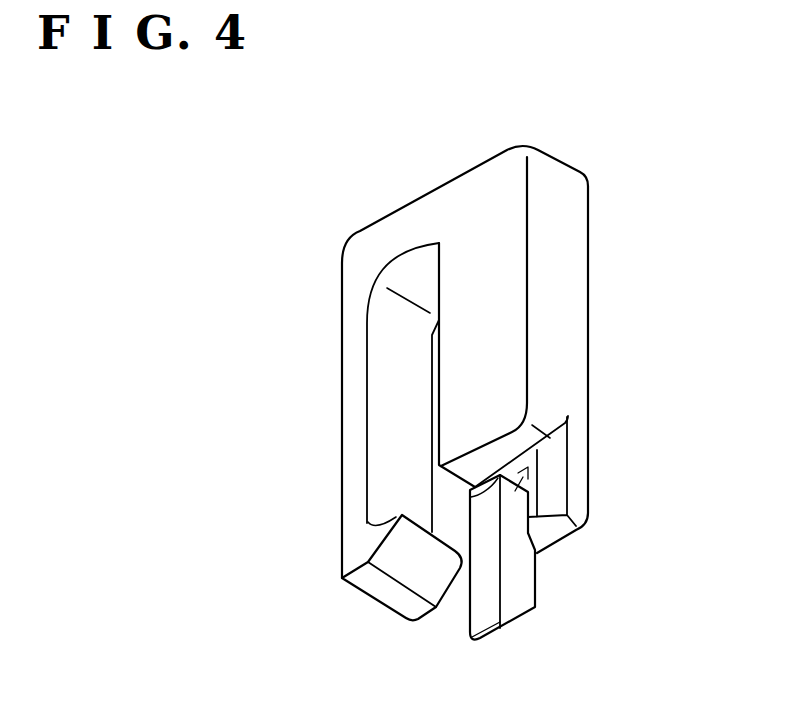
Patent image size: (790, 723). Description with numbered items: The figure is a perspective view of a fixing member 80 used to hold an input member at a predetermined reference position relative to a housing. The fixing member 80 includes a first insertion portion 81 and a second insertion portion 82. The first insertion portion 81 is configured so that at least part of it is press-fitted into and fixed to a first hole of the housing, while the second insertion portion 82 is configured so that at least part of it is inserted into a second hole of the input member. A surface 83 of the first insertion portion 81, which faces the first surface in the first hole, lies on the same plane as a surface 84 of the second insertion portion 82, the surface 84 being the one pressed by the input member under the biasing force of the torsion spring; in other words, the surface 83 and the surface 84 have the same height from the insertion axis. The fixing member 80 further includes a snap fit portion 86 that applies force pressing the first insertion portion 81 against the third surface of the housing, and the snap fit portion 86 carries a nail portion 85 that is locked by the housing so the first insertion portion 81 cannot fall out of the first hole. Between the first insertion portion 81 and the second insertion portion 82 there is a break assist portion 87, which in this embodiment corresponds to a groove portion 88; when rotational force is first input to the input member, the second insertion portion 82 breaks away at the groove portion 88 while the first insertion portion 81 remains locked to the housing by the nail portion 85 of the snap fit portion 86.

The fixing member 80 is at (619, 155).
The first insertion portion 81 is at (565, 272).
The second insertion portion 82 is at (537, 580).
The surface 83 is at (478, 199).
The surface 84 is at (478, 598).
The nail portion 85 is at (410, 551).
The snap fit portion 86 is at (337, 428).
The break assist portion 87 is at (525, 471).
The groove portion 88 is at (515, 487).